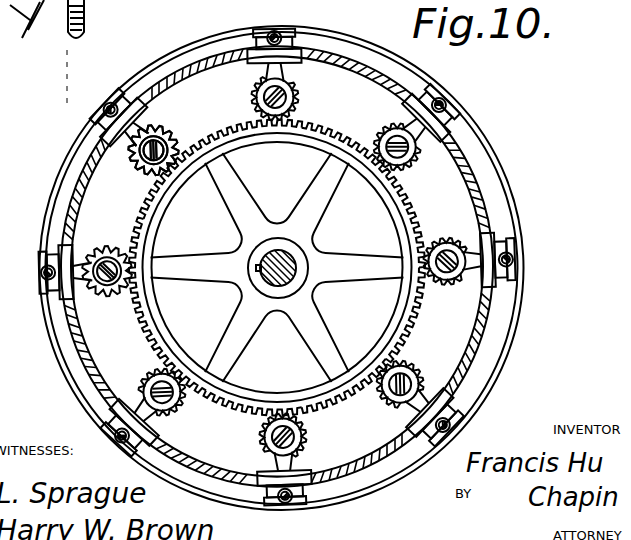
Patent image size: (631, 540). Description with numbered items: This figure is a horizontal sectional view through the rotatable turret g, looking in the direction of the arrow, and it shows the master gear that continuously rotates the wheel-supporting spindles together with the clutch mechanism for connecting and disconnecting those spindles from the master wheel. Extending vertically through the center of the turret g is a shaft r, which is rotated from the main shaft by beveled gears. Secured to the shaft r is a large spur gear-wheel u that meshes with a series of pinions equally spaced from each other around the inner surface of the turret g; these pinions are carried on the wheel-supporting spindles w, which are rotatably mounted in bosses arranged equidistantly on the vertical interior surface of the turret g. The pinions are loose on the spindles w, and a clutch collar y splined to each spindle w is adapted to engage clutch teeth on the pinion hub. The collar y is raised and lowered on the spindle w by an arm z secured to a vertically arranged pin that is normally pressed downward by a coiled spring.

The rotatable turret g is at (487, 207).
The large spur gear-wheel u is at (240, 338).
The shaft r is at (292, 259).
The wheel-supporting spindle w is at (172, 137).
The clutch collar y is at (157, 173).
The arm z is at (60, 283).